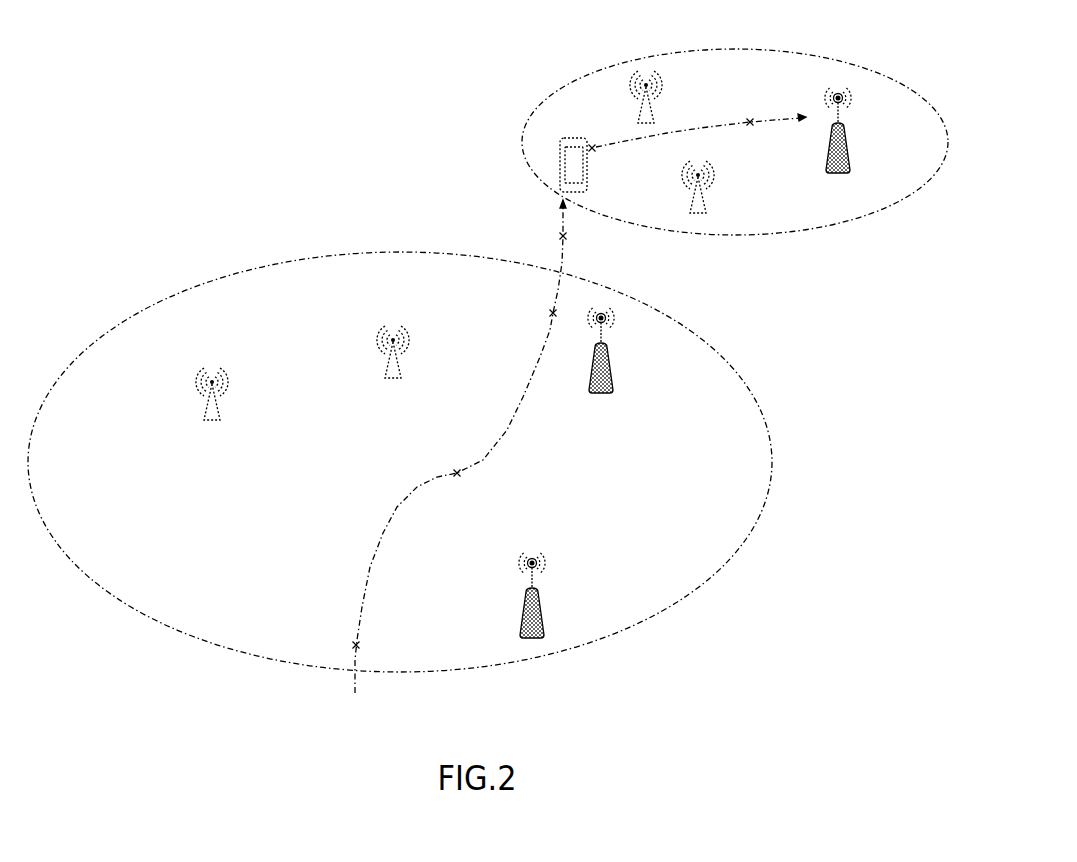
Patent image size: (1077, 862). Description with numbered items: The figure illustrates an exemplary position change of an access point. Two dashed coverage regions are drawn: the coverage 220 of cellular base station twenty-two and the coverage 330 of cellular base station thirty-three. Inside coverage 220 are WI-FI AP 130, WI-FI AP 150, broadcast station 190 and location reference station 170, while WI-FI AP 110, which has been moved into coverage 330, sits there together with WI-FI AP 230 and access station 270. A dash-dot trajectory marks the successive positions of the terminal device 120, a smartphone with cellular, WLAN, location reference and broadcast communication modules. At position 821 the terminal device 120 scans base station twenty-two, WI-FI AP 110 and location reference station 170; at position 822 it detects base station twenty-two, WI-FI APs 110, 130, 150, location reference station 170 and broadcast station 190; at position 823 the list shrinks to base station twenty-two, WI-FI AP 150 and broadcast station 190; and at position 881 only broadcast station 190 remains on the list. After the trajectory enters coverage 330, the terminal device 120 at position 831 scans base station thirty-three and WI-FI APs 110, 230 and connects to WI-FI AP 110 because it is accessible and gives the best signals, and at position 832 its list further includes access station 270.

The WI-FI AP 110 is at (649, 68).
The terminal device 120 is at (557, 158).
The WI-FI AP 130 is at (218, 364).
The WI-FI AP 150 is at (398, 325).
The location reference station 170 is at (561, 562).
The broadcast station 190 is at (604, 303).
The coverage of base station 22 220 is at (303, 258).
The WI-FI AP 230 is at (721, 200).
The access station 270 is at (843, 85).
The coverage of base station 33 330 is at (562, 83).
The position 821 is at (361, 645).
The position 822 is at (463, 476).
The position 823 is at (548, 312).
The position 831 is at (598, 153).
The position 832 is at (753, 116).
The position 881 is at (558, 233).